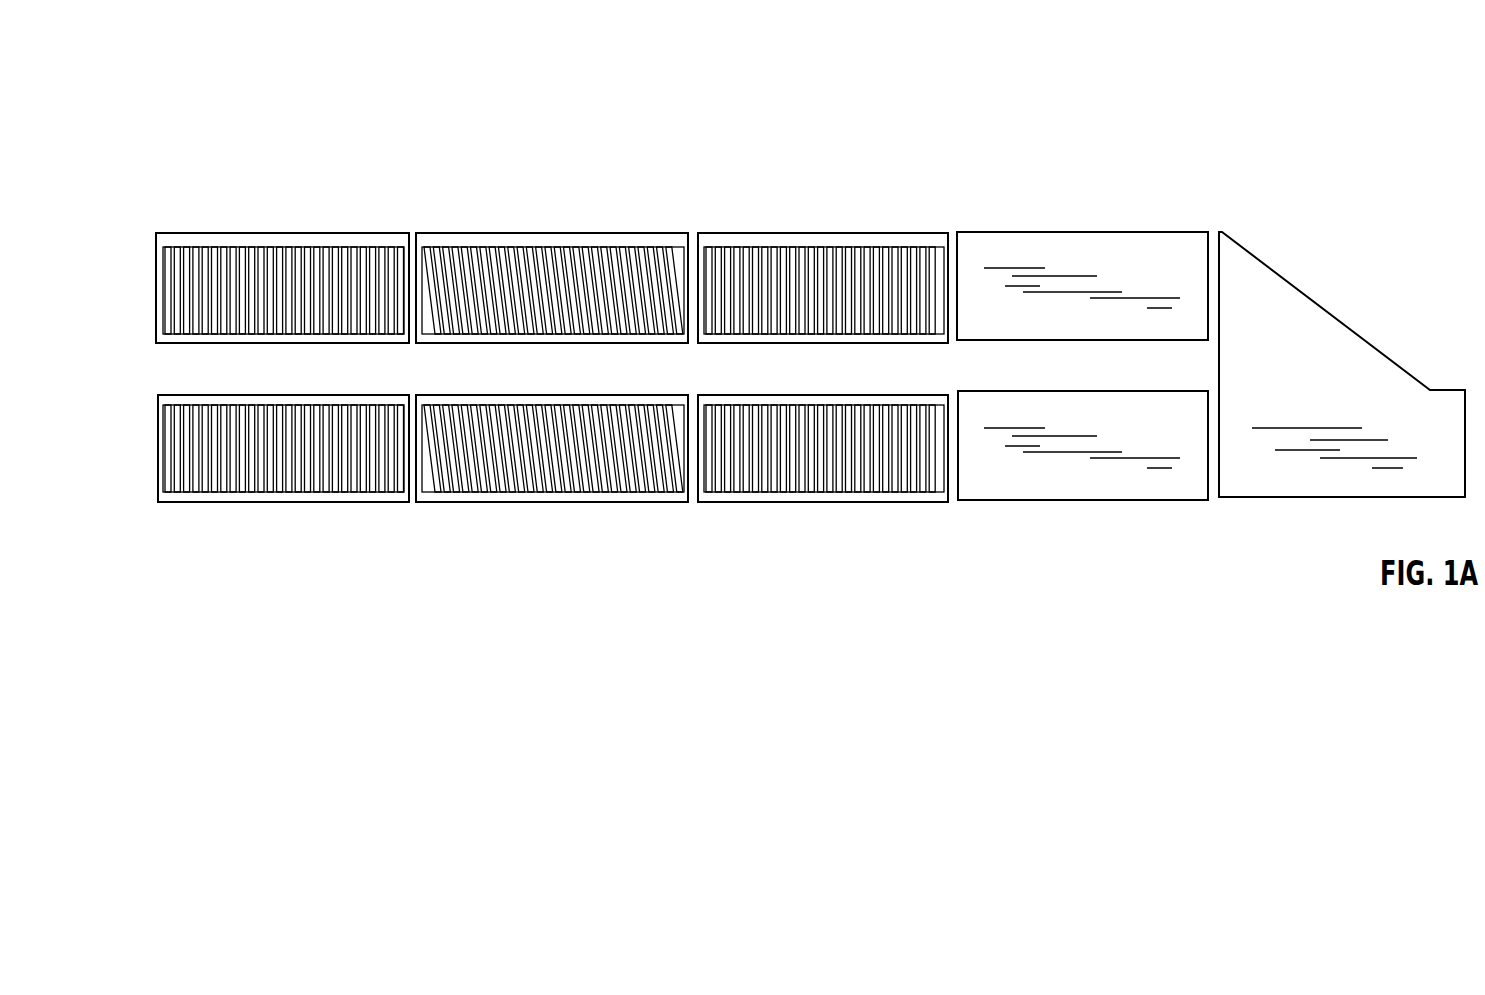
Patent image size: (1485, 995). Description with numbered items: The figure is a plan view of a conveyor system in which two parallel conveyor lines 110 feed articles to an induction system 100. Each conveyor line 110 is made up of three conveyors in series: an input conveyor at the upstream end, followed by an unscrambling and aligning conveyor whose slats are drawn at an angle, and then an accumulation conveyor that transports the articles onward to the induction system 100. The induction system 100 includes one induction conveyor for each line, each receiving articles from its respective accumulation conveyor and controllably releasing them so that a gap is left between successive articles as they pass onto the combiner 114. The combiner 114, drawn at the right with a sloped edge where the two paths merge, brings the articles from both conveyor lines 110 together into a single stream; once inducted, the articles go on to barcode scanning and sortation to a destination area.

The combiner 114 is at (1300, 316).
The conveyor line 110 is at (484, 124).
The induction system 100 is at (1156, 120).